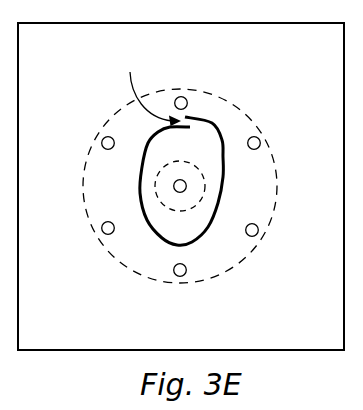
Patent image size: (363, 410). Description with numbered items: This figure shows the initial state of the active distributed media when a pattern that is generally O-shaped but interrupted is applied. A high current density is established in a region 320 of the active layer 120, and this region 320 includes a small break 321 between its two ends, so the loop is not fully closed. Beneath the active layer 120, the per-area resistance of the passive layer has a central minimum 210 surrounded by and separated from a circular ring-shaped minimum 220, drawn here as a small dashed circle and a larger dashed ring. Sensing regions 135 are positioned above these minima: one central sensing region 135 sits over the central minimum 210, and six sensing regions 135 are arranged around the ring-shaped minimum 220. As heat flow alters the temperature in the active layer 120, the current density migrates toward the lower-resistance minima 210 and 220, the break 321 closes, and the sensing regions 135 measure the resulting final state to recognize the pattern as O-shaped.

The active layer 120 is at (260, 326).
The sensing regions 135 is at (182, 97).
The central minimum 210 is at (172, 195).
The circular ring-shaped minimum 220 is at (240, 117).
The region 320 is at (223, 172).
The small break 321 is at (149, 88).